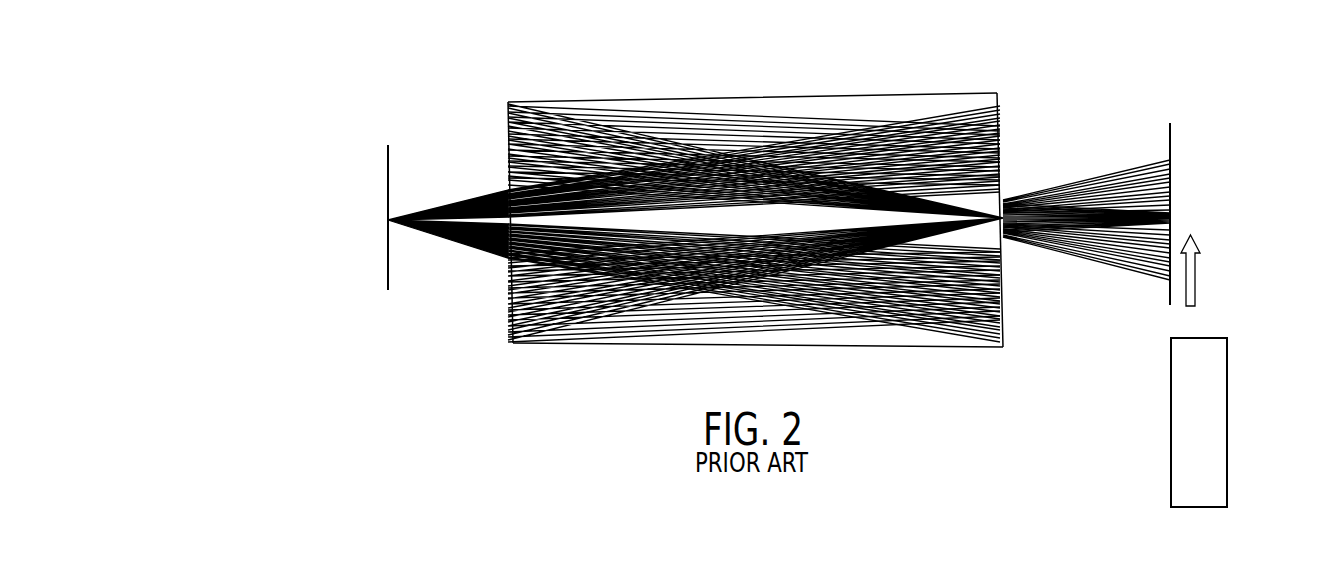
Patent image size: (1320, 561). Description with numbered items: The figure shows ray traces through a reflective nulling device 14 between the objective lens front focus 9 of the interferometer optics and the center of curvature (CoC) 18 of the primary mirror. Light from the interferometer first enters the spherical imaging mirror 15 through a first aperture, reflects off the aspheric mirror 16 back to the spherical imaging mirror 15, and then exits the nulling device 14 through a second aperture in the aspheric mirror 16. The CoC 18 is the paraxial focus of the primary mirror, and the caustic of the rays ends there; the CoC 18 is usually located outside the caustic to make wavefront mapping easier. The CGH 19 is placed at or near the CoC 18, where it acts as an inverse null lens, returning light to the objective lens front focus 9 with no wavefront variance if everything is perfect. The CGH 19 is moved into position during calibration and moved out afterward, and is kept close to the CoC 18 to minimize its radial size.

The objective lens front focus 9 is at (387, 261).
The nulling device 14 is at (599, 101).
The spherical imaging mirror 15 is at (508, 297).
The aspheric mirror 16 is at (1003, 310).
The center of curvature (CoC) 18 is at (1170, 130).
The CGH 19 is at (1227, 487).